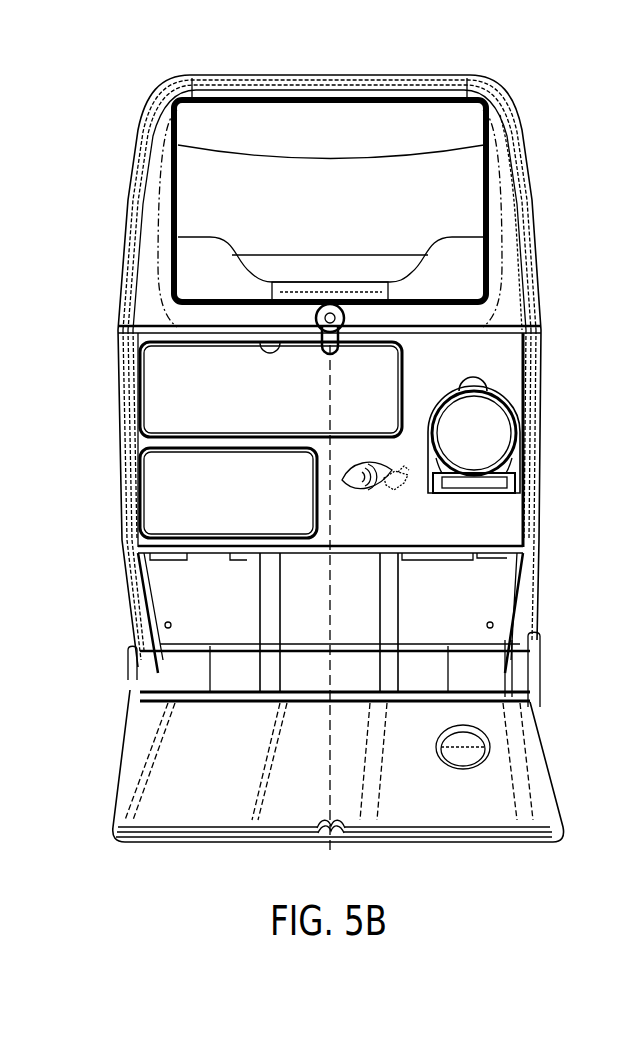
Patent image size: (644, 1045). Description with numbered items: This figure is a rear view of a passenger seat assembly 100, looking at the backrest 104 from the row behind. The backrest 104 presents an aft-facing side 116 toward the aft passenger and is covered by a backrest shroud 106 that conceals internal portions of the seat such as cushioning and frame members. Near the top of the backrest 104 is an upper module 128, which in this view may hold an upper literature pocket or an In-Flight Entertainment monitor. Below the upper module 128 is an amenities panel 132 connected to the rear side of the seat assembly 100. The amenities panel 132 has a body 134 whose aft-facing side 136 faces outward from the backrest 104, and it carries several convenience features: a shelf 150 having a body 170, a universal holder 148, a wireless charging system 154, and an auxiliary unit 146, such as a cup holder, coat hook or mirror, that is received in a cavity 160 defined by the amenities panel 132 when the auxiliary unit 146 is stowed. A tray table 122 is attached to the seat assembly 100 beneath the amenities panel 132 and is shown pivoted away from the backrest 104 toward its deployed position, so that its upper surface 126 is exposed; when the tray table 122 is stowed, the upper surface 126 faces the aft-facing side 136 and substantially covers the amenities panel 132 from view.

The passenger seat assembly 100 is at (108, 66).
The backrest 104 is at (148, 150).
The backrest shroud 106 is at (155, 257).
The aft-facing side 116 is at (520, 213).
The tray table 122 is at (480, 843).
The upper surface 126 is at (541, 799).
The upper module 128 is at (445, 137).
The amenities panel 132 is at (512, 342).
The body 134 is at (522, 392).
The aft-facing side 136 is at (508, 517).
The auxiliary unit 146 is at (508, 445).
The universal holder 148 is at (142, 468).
The shelf 150 is at (157, 355).
The wireless charging system 154 is at (362, 490).
The cavity 160 is at (470, 377).
The body 170 is at (165, 370).